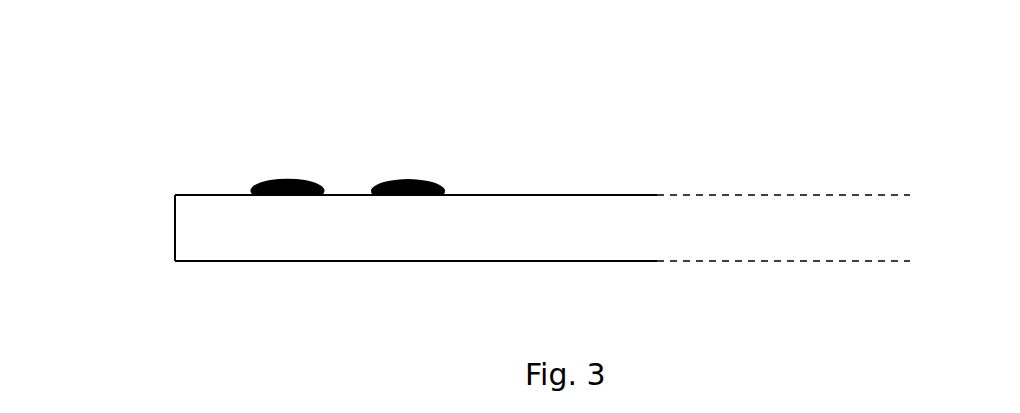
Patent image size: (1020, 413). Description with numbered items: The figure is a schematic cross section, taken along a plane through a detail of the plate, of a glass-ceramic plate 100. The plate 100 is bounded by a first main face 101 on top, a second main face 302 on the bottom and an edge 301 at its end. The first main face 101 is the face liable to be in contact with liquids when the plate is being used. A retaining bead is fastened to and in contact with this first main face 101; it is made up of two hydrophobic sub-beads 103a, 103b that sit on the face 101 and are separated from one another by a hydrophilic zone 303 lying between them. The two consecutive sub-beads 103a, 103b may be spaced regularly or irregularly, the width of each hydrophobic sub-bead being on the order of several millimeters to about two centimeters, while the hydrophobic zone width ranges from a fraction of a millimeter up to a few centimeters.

The glass-ceramic plate 100 is at (160, 146).
The first main face 101 is at (579, 192).
The hydrophobic sub-bead 103a is at (288, 178).
The hydrophobic sub-bead 103b is at (423, 178).
The edge 301 is at (175, 228).
The second main face 302 is at (465, 263).
The hydrophilic zone 303 is at (355, 193).